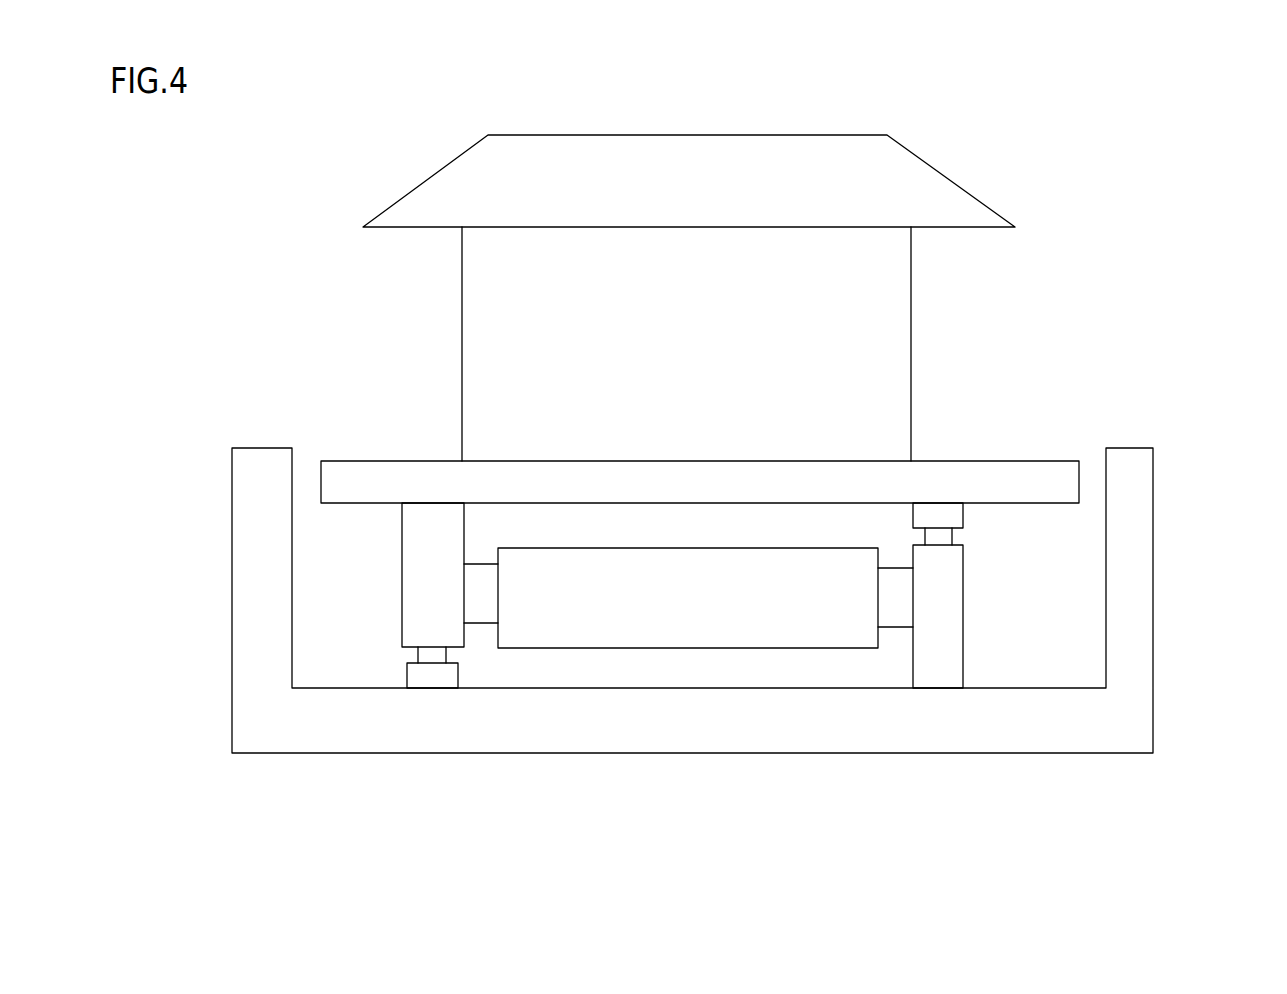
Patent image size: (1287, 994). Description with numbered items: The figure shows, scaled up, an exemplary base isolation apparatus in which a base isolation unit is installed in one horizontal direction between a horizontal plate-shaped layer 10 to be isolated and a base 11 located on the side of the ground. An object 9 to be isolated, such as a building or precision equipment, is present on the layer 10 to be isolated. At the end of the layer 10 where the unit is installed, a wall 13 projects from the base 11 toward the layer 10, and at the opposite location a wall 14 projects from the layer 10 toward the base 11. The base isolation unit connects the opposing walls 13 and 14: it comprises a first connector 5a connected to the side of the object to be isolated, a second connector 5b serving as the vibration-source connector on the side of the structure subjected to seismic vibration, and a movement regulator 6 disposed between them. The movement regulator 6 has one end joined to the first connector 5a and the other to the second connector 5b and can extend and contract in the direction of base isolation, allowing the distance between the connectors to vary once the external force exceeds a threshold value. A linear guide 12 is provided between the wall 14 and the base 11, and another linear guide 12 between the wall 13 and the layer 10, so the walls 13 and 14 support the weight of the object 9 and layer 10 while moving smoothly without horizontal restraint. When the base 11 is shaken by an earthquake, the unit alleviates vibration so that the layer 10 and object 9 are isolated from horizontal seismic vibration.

The first connector 5a is at (483, 605).
The second connector 5b is at (898, 610).
The movement regulator 6 is at (727, 612).
The object to be isolated 9 is at (877, 360).
The layer to be isolated 10 is at (1000, 480).
The base 11 is at (1132, 643).
The linear guide 12 is at (435, 656).
The wall 13 is at (953, 618).
The wall 14 is at (415, 595).